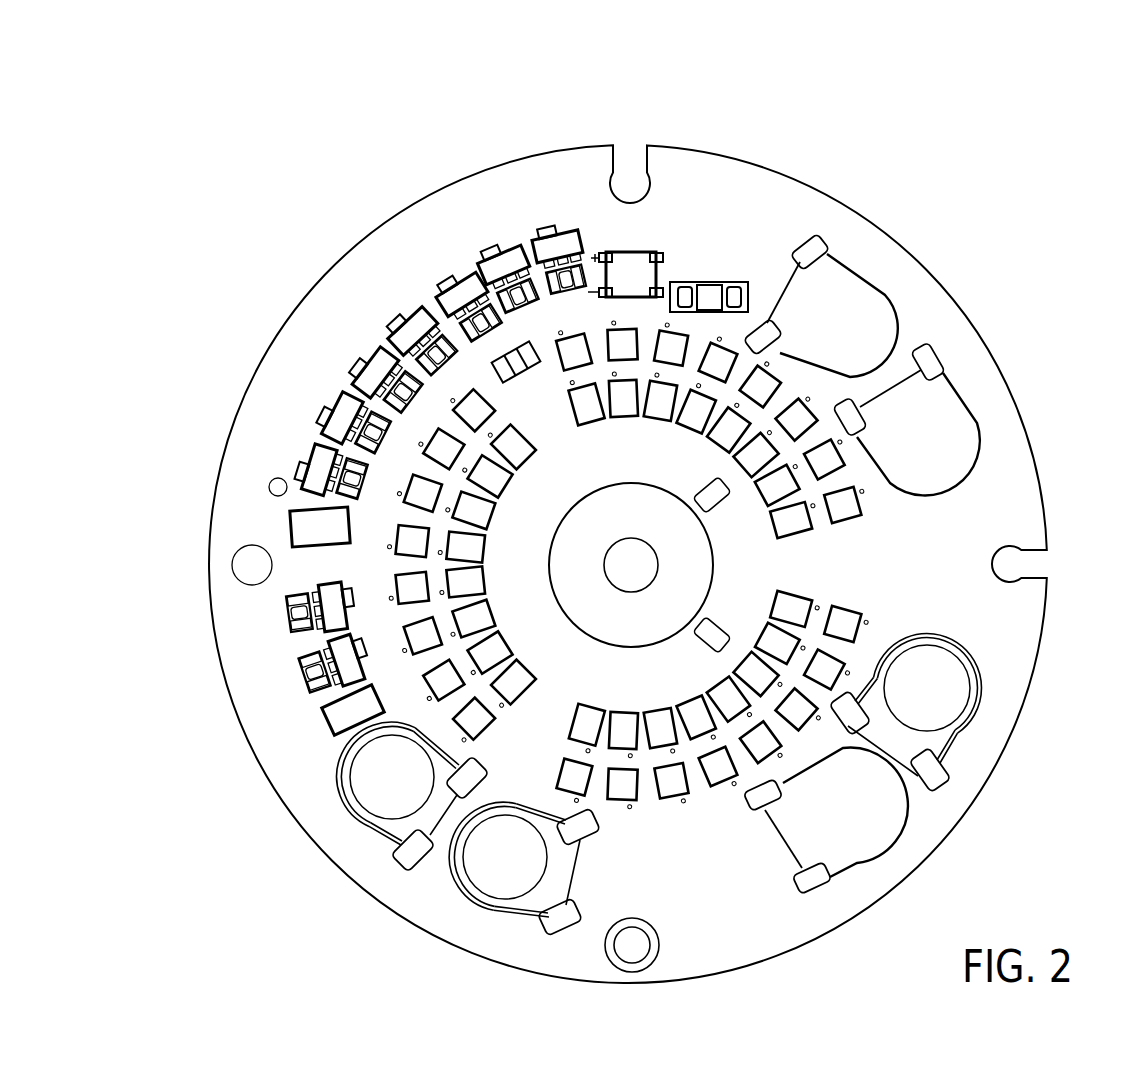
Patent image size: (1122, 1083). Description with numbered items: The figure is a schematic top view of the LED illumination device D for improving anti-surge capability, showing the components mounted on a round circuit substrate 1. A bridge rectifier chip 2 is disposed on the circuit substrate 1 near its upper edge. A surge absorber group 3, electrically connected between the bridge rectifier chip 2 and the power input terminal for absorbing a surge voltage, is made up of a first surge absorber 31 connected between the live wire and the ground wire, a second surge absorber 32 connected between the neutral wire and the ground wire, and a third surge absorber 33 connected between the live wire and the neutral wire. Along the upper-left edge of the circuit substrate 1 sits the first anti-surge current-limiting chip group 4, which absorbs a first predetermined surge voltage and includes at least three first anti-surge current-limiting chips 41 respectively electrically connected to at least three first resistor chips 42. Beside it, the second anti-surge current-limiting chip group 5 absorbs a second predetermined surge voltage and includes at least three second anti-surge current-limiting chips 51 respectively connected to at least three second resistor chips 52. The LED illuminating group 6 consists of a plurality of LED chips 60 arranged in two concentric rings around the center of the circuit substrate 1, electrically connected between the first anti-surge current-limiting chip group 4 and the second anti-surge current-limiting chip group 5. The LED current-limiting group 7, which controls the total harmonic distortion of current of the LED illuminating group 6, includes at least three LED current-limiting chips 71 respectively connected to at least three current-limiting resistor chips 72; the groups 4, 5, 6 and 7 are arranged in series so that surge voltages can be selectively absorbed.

The LED illumination device D is at (617, 529).
The circuit substrate 1 is at (968, 316).
The bridge rectifier chip 2 is at (642, 254).
The surge absorber group 3 is at (655, 812).
The first surge absorber 31 is at (376, 785).
The second surge absorber 32 is at (487, 870).
The third surge absorber 33 is at (935, 690).
The first anti-surge current-limiting chip group 4 is at (490, 205).
The first anti-surge current-limiting chip 41 is at (452, 292).
The first resistor chip 42 is at (475, 317).
The second anti-surge current-limiting chip group 5 is at (298, 340).
The second anti-surge current-limiting chip 51 is at (408, 328).
The second resistor chip 52 is at (428, 356).
The LED illuminating group 6 is at (647, 563).
The LED chip 60 is at (762, 384).
The LED current-limiting group 7 is at (251, 566).
The LED current-limiting chip 71 is at (319, 470).
The current-limiting resistor chip 72 is at (352, 488).